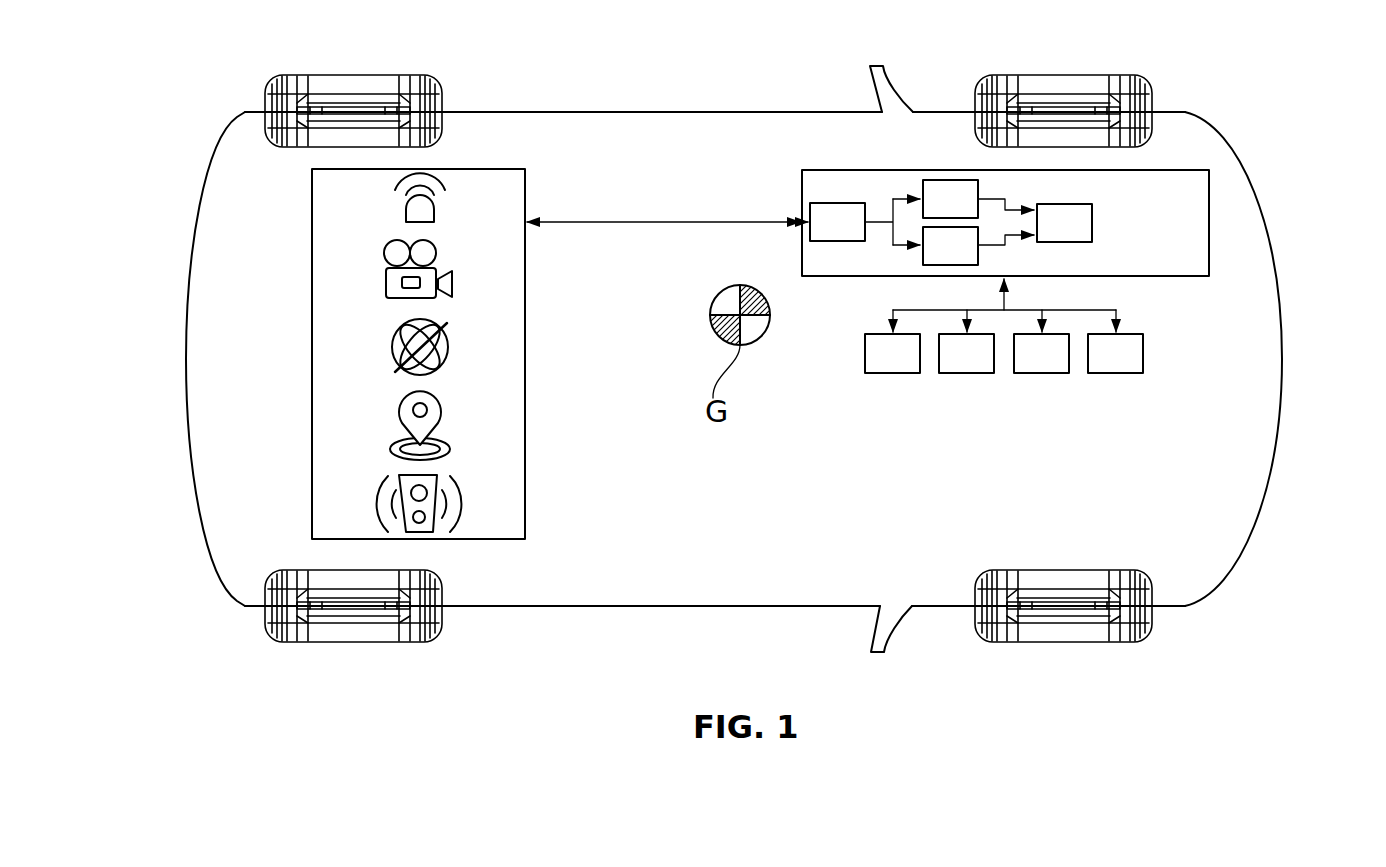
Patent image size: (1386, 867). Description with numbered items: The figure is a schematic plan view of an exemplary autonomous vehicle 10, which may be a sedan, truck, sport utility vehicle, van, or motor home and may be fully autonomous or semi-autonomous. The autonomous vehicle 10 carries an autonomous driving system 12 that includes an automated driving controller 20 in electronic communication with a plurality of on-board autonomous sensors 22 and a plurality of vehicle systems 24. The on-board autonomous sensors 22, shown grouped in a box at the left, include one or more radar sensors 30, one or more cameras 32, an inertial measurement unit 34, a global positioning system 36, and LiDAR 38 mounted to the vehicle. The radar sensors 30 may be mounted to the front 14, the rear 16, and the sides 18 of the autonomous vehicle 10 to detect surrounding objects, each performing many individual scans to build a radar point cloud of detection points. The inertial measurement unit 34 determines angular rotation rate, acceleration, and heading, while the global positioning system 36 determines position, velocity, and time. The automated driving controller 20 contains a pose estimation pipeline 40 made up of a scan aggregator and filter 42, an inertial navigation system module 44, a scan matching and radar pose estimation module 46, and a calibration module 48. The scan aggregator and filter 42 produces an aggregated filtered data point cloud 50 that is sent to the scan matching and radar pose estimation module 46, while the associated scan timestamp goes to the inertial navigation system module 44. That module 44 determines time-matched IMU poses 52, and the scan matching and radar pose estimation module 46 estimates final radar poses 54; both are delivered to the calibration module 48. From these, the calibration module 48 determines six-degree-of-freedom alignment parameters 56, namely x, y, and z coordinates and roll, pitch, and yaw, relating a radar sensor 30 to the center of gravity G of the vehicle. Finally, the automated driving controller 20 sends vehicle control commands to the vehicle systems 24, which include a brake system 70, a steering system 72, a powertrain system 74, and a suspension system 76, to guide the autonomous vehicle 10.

The autonomous vehicle 10 is at (547, 35).
The autonomous driving system 12 is at (1175, 128).
The front 14 is at (1282, 358).
The rear 16 is at (186, 360).
The sides 18 is at (578, 110).
The automated driving controller 20 is at (1170, 169).
The on-board autonomous sensors 22 is at (485, 169).
The vehicle systems 24 is at (923, 410).
The radar sensor 30 is at (436, 215).
The camera 32 is at (380, 285).
The inertial measurement unit (IMU) 34 is at (393, 348).
The global positioning system (GPS) 36 is at (388, 448).
The LiDAR 38 is at (375, 503).
The pose estimation pipeline 40 is at (884, 184).
The scan aggregator and filter 42 is at (824, 236).
The inertial navigation system (INS) module 44 is at (937, 213).
The scan matching and radar pose estimation module 46 is at (937, 260).
The calibration module 48 is at (1051, 237).
The aggregated filtered data point cloud 50 is at (879, 226).
The time-matched IMU poses 52 is at (1012, 207).
The final radar poses 54 is at (1012, 239).
The 6DoF alignment parameters 56 is at (1193, 219).
The brake system 70 is at (879, 368).
The steering system 72 is at (953, 368).
The powertrain system 74 is at (1028, 368).
The suspension system 76 is at (1102, 368).